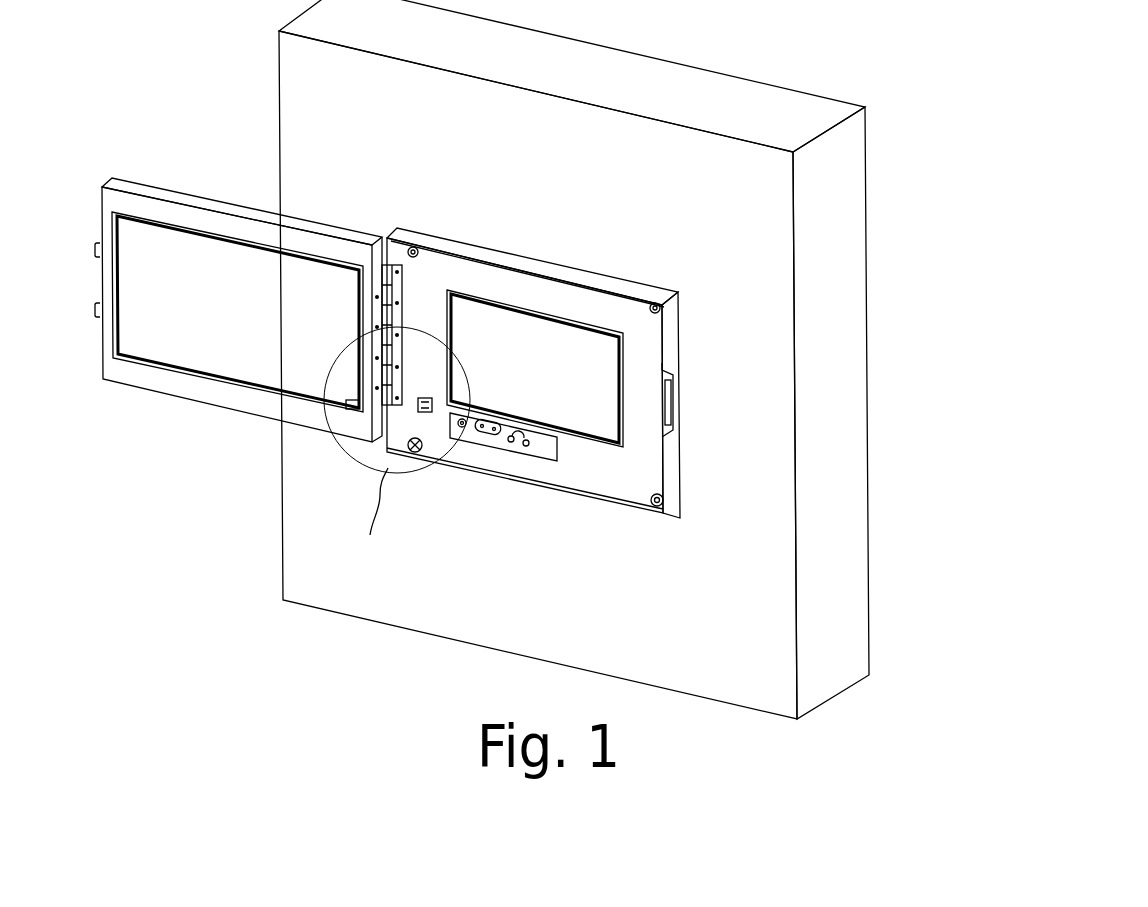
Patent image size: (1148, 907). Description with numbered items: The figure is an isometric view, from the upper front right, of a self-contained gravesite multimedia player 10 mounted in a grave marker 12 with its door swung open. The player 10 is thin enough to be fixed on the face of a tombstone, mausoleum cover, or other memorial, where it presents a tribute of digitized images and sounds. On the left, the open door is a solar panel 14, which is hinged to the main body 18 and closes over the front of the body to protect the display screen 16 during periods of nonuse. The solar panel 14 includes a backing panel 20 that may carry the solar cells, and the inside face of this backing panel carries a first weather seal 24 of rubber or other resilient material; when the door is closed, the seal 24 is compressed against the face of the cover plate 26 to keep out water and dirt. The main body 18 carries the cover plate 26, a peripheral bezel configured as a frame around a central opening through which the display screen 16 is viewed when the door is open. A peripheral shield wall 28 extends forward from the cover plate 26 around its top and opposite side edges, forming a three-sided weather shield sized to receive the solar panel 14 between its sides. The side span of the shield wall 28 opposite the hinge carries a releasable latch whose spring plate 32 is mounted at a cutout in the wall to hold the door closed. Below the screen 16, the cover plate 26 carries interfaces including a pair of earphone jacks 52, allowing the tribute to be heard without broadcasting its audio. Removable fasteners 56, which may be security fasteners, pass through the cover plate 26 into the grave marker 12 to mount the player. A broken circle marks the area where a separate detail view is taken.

The multimedia player 10 is at (344, 167).
The grave marker 12 is at (803, 102).
The solar panel 14 is at (238, 295).
The display screen 16 is at (555, 392).
The main body 18 is at (580, 379).
The backing panel 20 is at (250, 313).
The first weather seal 24 is at (222, 397).
The cover plate 26 is at (525, 285).
The peripheral shield wall 28 is at (645, 290).
The spring plate 32 is at (673, 390).
The earphone jacks 52 is at (520, 442).
The removable fasteners 56 is at (657, 510).